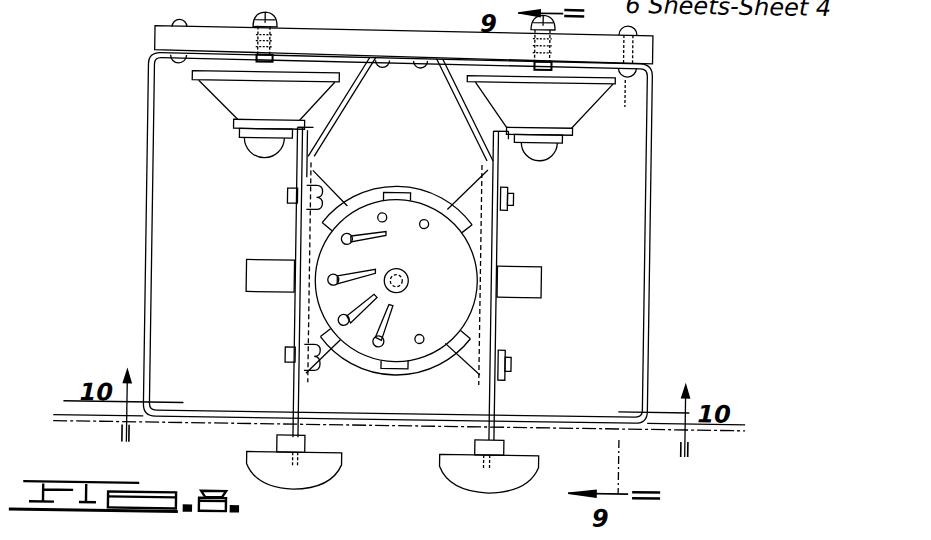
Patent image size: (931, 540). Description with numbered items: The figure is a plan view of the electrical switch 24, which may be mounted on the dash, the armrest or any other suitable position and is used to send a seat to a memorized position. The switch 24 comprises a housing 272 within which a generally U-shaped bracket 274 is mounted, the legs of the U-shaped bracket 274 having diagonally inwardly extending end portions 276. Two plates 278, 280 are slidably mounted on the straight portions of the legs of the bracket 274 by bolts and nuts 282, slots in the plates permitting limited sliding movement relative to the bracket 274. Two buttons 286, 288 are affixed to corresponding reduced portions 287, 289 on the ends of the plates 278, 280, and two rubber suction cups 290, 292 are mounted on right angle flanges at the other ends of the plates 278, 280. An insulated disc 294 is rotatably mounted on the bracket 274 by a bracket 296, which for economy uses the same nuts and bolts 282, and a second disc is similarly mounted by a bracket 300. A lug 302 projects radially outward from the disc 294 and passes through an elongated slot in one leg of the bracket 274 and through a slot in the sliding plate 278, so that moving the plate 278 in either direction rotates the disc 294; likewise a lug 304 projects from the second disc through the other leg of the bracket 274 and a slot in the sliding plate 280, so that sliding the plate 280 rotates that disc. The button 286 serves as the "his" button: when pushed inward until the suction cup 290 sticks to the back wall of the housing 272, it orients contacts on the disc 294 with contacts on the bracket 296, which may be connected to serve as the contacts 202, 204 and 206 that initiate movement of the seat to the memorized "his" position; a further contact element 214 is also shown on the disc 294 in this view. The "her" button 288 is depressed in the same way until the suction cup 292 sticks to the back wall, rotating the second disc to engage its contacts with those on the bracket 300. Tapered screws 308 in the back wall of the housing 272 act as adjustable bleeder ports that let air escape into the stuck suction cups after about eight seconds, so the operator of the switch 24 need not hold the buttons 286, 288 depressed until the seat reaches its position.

The switch 24 is at (655, 107).
The housing 272 is at (652, 236).
The U-shaped bracket 274 is at (400, 404).
The diagonally inwardly extending end portions 276 is at (458, 100).
The plate 278 is at (297, 219).
The plate 280 is at (508, 223).
The bolts and nuts 282 is at (287, 186).
The button 286 is at (327, 484).
The reduced portion 287 is at (296, 426).
The button 288 is at (486, 475).
The reduced portion 289 is at (500, 435).
The rubber suction cup 290 is at (220, 93).
The rubber suction cup 292 is at (573, 111).
The insulated disc 294 is at (378, 184).
The bracket 296 is at (438, 204).
The bracket 300 is at (325, 185).
The lug 302 is at (247, 272).
The lug 304 is at (542, 267).
The tapered screws 308 is at (270, 22).
The contact 202 is at (339, 319).
The contact 204 is at (330, 275).
The contact 206 is at (389, 238).
The pointer 214 is at (385, 343).